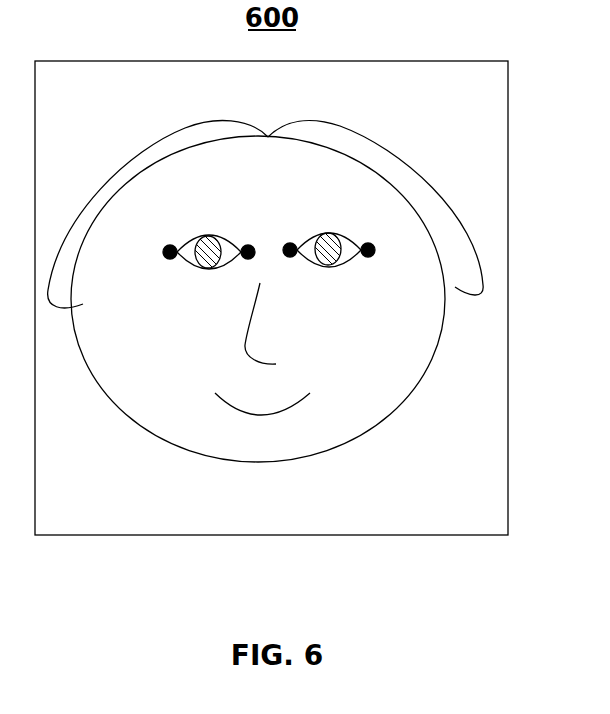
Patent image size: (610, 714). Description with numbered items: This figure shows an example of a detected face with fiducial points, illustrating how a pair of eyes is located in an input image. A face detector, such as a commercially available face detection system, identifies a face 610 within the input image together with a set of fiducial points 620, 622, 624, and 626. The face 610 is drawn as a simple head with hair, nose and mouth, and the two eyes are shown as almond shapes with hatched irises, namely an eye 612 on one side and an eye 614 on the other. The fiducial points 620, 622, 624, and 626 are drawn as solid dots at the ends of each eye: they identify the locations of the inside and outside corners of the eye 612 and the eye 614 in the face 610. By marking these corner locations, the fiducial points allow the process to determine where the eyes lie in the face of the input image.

The face 610 is at (448, 171).
The eye 612 is at (195, 232).
The eye 614 is at (318, 231).
The fiducial point 620 is at (168, 260).
The fiducial point 622 is at (246, 260).
The fiducial point 624 is at (292, 259).
The fiducial point 626 is at (370, 259).